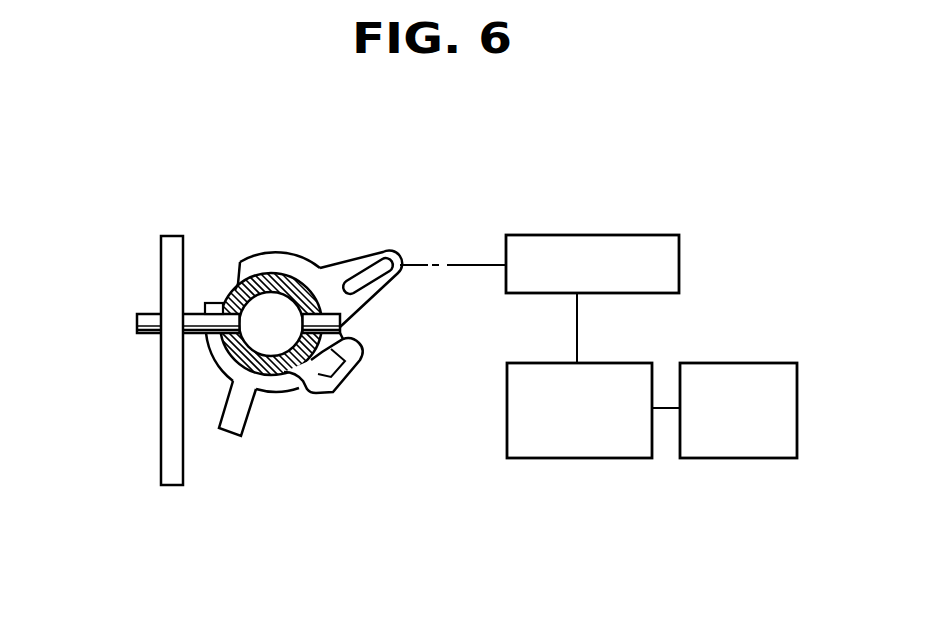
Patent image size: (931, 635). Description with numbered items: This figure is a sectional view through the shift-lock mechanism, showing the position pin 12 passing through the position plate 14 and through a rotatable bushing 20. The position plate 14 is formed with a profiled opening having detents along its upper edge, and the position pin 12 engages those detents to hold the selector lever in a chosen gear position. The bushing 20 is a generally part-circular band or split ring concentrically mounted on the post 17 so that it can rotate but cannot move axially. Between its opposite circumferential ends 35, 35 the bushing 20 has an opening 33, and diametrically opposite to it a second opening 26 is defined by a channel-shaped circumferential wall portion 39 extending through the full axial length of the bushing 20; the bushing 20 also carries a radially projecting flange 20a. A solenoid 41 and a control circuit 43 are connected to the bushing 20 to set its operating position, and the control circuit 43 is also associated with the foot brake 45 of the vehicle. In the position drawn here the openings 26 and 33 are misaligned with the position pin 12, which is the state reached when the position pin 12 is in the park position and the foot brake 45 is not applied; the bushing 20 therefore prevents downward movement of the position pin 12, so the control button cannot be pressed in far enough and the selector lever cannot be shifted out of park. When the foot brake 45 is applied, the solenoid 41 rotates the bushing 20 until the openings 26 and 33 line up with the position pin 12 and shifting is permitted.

The position pin 12 is at (137, 318).
The position plate 14 is at (170, 386).
The post 17 is at (283, 370).
The bushing 20 is at (297, 253).
The radially projecting flange 20a is at (237, 417).
The opening 26 is at (340, 344).
The opening 33 is at (217, 282).
The circumferential ends 35 is at (210, 303).
The channel-shaped circumferential wall portion 39 is at (343, 363).
The solenoid 41 is at (593, 235).
The control circuit 43 is at (568, 459).
The foot brake 45 is at (741, 459).